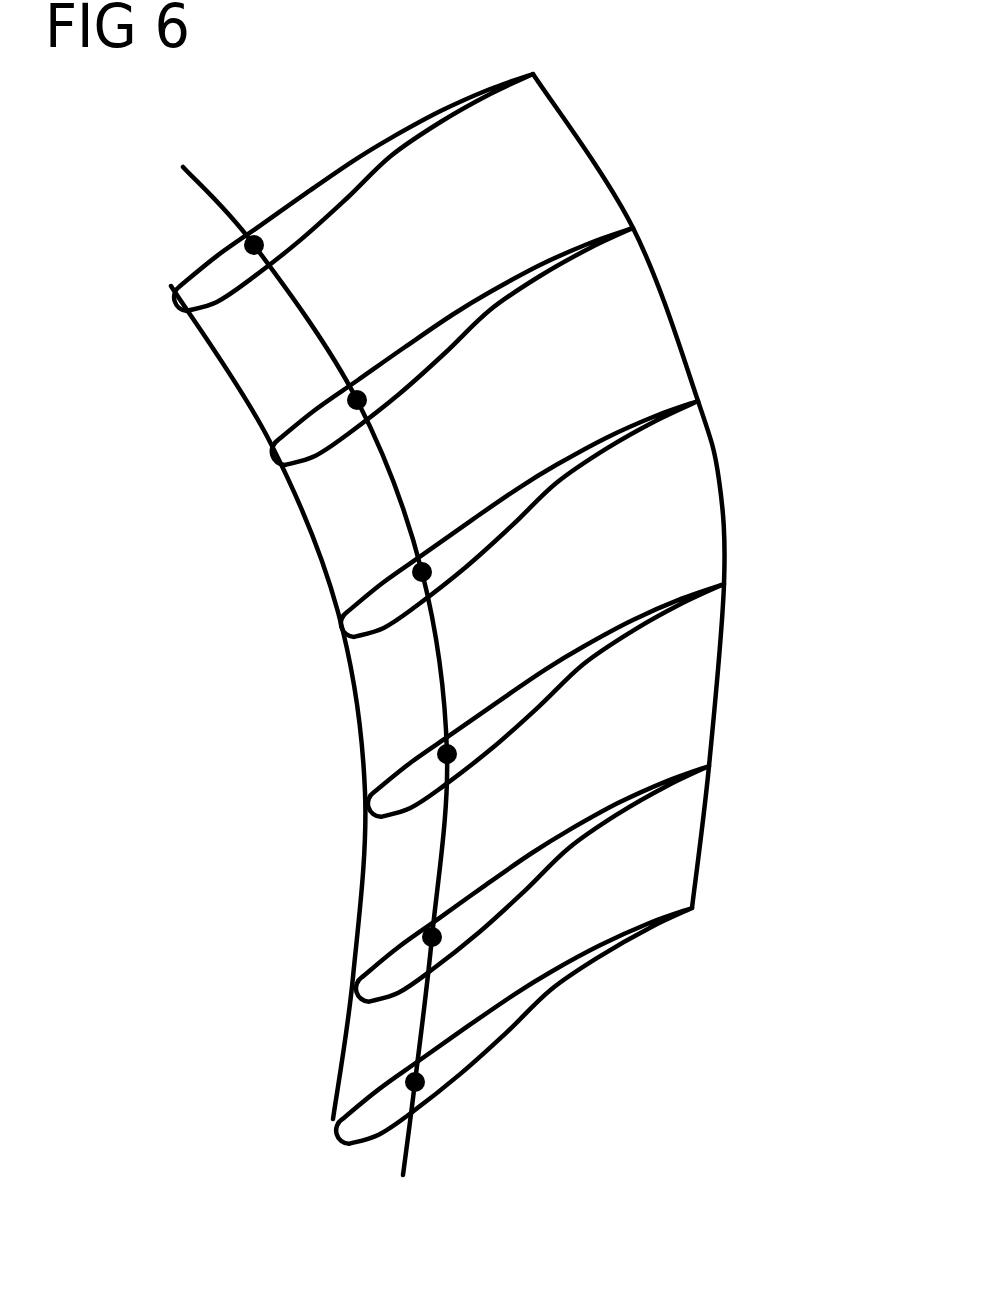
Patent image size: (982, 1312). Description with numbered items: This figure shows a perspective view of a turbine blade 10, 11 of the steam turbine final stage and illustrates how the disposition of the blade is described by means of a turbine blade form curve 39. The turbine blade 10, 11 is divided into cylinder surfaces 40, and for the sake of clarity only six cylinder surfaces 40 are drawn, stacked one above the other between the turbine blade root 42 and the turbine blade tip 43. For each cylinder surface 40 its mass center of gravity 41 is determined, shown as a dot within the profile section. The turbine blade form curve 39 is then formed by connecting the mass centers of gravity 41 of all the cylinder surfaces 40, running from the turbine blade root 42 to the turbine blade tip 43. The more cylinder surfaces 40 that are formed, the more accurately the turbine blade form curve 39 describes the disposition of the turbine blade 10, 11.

The guide blade 10 is at (705, 491).
The moving blade 11 is at (719, 480).
The turbine blade form curve 39 is at (405, 1153).
The cylinder surface 40 is at (409, 594).
The mass center of gravity 41 is at (263, 240).
The turbine blade root 42 is at (412, 127).
The turbine blade tip 43 is at (610, 953).